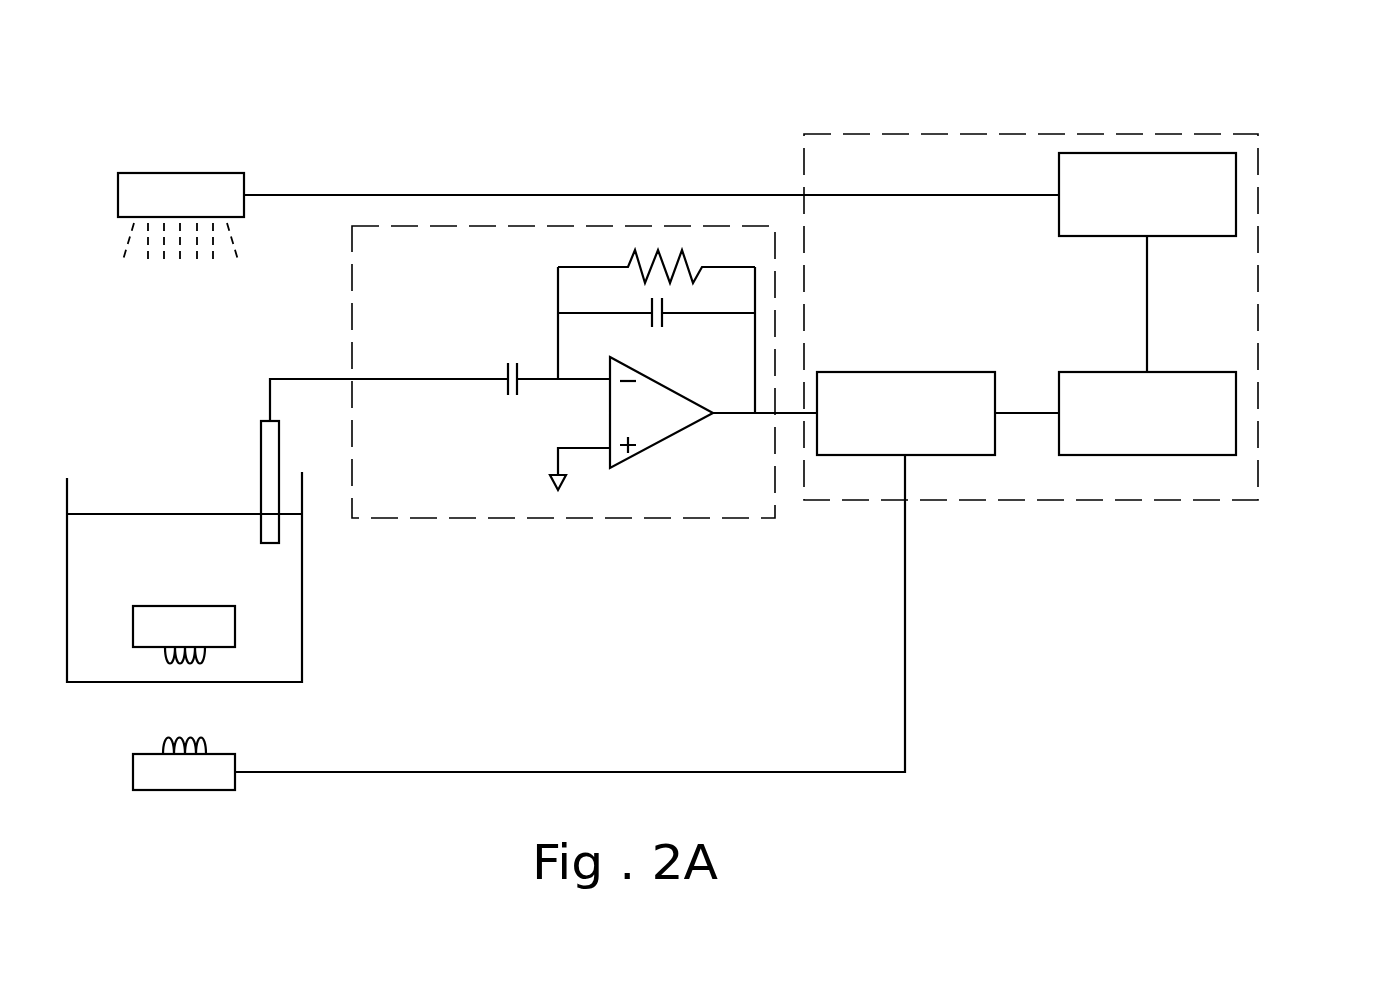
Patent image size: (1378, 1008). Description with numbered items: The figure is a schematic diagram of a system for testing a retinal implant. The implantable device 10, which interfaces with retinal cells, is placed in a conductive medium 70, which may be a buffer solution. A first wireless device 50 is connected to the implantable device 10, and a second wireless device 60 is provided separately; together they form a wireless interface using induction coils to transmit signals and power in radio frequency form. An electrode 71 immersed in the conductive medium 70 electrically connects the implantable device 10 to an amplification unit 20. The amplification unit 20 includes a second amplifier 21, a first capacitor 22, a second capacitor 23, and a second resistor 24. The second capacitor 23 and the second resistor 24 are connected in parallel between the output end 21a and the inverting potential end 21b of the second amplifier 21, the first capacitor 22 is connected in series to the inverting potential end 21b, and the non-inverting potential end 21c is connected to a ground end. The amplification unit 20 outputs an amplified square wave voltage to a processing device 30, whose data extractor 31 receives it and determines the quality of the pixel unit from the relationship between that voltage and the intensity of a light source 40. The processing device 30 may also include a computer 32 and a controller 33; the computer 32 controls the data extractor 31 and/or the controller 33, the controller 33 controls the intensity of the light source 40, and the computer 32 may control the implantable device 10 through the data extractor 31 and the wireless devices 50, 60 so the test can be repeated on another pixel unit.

The implantable device 10 is at (185, 625).
The amplification unit 20 is at (570, 226).
The second amplifier 21 is at (653, 438).
The output end 21a is at (732, 415).
The inverting potential end 21b is at (592, 381).
The non-inverting potential end 21c is at (573, 447).
The first capacitor 22 is at (507, 377).
The second capacitor 23 is at (647, 312).
The second resistor 24 is at (628, 268).
The processing device 30 is at (1090, 134).
The data extractor 31 is at (950, 372).
The computer 32 is at (1238, 411).
The controller 33 is at (1238, 188).
The light source 40 is at (173, 173).
The first wireless device 50 is at (205, 660).
The second wireless device 60 is at (205, 748).
The conductive medium 70 is at (101, 532).
The electrode 71 is at (270, 480).